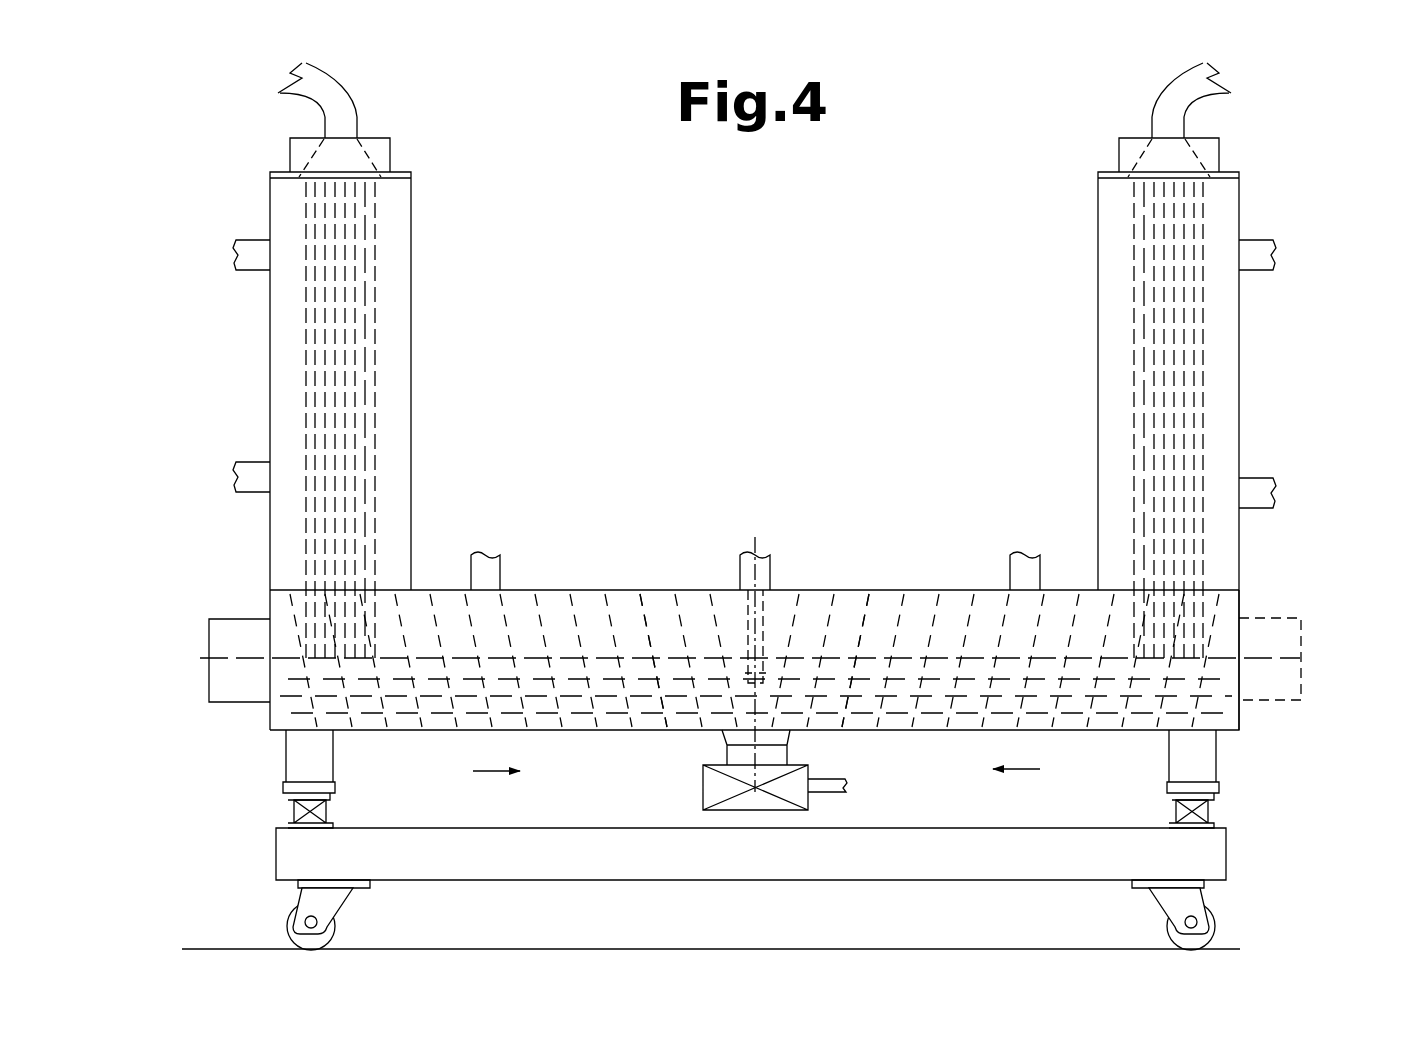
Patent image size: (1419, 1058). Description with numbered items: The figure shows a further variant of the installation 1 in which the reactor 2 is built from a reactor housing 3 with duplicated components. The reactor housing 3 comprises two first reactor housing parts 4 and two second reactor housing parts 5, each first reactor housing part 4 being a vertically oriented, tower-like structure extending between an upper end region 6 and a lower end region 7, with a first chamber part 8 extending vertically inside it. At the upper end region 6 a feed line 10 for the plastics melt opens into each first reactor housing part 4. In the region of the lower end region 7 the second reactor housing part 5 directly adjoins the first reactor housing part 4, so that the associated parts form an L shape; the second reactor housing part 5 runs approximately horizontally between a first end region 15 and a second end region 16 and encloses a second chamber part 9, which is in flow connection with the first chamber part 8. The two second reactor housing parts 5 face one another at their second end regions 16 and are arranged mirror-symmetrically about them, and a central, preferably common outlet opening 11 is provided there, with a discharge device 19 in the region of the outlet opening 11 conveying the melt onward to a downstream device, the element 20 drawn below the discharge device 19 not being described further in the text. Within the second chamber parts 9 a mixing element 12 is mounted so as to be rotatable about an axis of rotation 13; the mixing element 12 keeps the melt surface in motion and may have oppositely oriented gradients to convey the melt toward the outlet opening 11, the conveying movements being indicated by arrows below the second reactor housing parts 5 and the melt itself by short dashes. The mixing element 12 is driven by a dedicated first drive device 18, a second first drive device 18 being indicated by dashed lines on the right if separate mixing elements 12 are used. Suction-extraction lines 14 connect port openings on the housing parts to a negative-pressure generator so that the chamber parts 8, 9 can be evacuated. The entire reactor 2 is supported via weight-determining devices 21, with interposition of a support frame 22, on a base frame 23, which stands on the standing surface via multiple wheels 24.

The installation 1 is at (1337, 148).
The reactor 2 is at (873, 240).
The reactor housing 3 is at (636, 247).
The first reactor housing part 4 is at (400, 270).
The second reactor housing part 5 is at (585, 612).
The upper end region 6 is at (256, 179).
The lower end region 7 is at (245, 577).
The first chamber part 8 is at (290, 333).
The second chamber part 9 is at (522, 628).
The feed line 10 is at (282, 80).
The outlet opening 11 is at (746, 737).
The mixing element 12 is at (641, 604).
The axis of rotation 13 is at (1256, 660).
The suction-extraction line 14 is at (240, 255).
The first end region 15 is at (256, 721).
The second end region 16 is at (768, 519).
The first drive device 18 is at (224, 632).
The discharge device 19 is at (696, 808).
The discharge pipe 20 is at (757, 808).
The weight-determining device 21 is at (296, 806).
The support frame 22 is at (318, 769).
The base frame 23 is at (1210, 856).
The wheel 24 is at (288, 912).